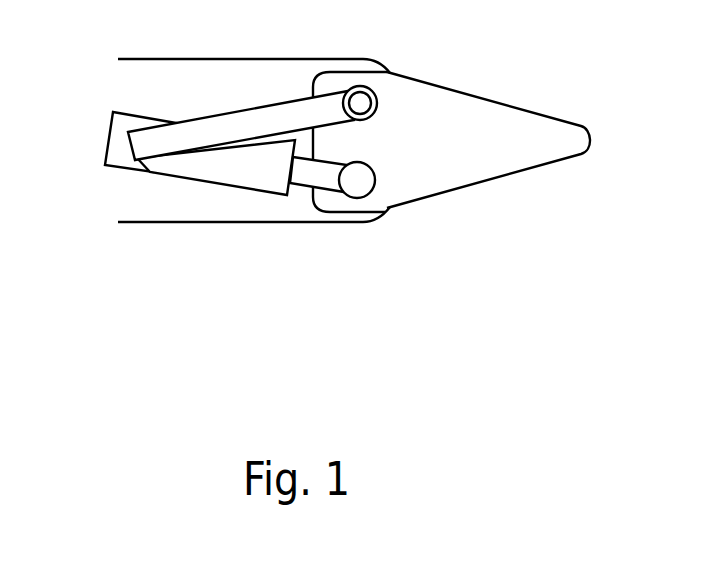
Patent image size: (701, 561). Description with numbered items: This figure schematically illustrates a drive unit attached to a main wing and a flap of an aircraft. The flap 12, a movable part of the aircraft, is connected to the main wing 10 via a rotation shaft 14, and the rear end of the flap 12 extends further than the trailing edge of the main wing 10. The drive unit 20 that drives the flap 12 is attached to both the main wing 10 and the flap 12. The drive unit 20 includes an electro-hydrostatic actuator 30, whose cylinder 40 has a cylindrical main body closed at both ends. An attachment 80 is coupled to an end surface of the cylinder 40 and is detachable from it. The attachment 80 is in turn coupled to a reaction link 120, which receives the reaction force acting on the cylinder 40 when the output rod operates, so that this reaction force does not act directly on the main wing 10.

The main wing 10 is at (138, 198).
The flap 12 is at (540, 127).
The rotation shaft 14 is at (360, 85).
The drive unit 20 is at (111, 107).
The electro-hydrostatic actuator 30 is at (250, 196).
The cylinder 40 is at (202, 175).
The attachment 80 is at (107, 149).
The reaction link 120 is at (213, 123).